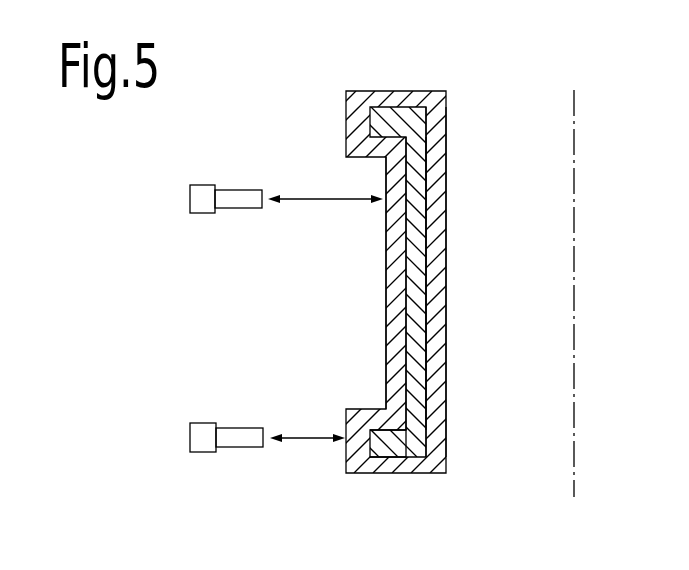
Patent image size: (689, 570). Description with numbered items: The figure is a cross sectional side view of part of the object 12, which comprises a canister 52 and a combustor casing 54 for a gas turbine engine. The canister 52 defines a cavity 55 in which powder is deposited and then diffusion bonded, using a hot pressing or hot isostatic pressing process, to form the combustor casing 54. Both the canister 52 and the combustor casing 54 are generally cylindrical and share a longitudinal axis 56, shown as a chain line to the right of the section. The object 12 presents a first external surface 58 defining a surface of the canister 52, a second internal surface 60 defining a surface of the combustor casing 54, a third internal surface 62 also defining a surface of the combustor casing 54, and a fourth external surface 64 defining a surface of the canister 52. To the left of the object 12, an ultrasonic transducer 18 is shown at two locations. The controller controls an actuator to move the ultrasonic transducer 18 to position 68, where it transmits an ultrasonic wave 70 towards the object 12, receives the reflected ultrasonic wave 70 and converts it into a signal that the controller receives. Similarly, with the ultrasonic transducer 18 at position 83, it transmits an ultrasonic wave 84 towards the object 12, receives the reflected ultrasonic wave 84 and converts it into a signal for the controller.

The object 12 is at (344, 271).
The canister 52 is at (345, 115).
The combustor casing 54 is at (422, 150).
The cavity 55 is at (406, 459).
The longitudinal axis 56 is at (574, 280).
The first external surface 58 is at (385, 265).
The second internal surface 60 is at (400, 322).
The third internal surface 62 is at (420, 322).
The fourth external surface 64 is at (446, 272).
The ultrasonic transducer 18 is at (205, 300).
The position 68 is at (180, 216).
The position 83 is at (175, 453).
The ultrasonic wave 70 is at (312, 202).
The ultrasonic wave 84 is at (308, 442).